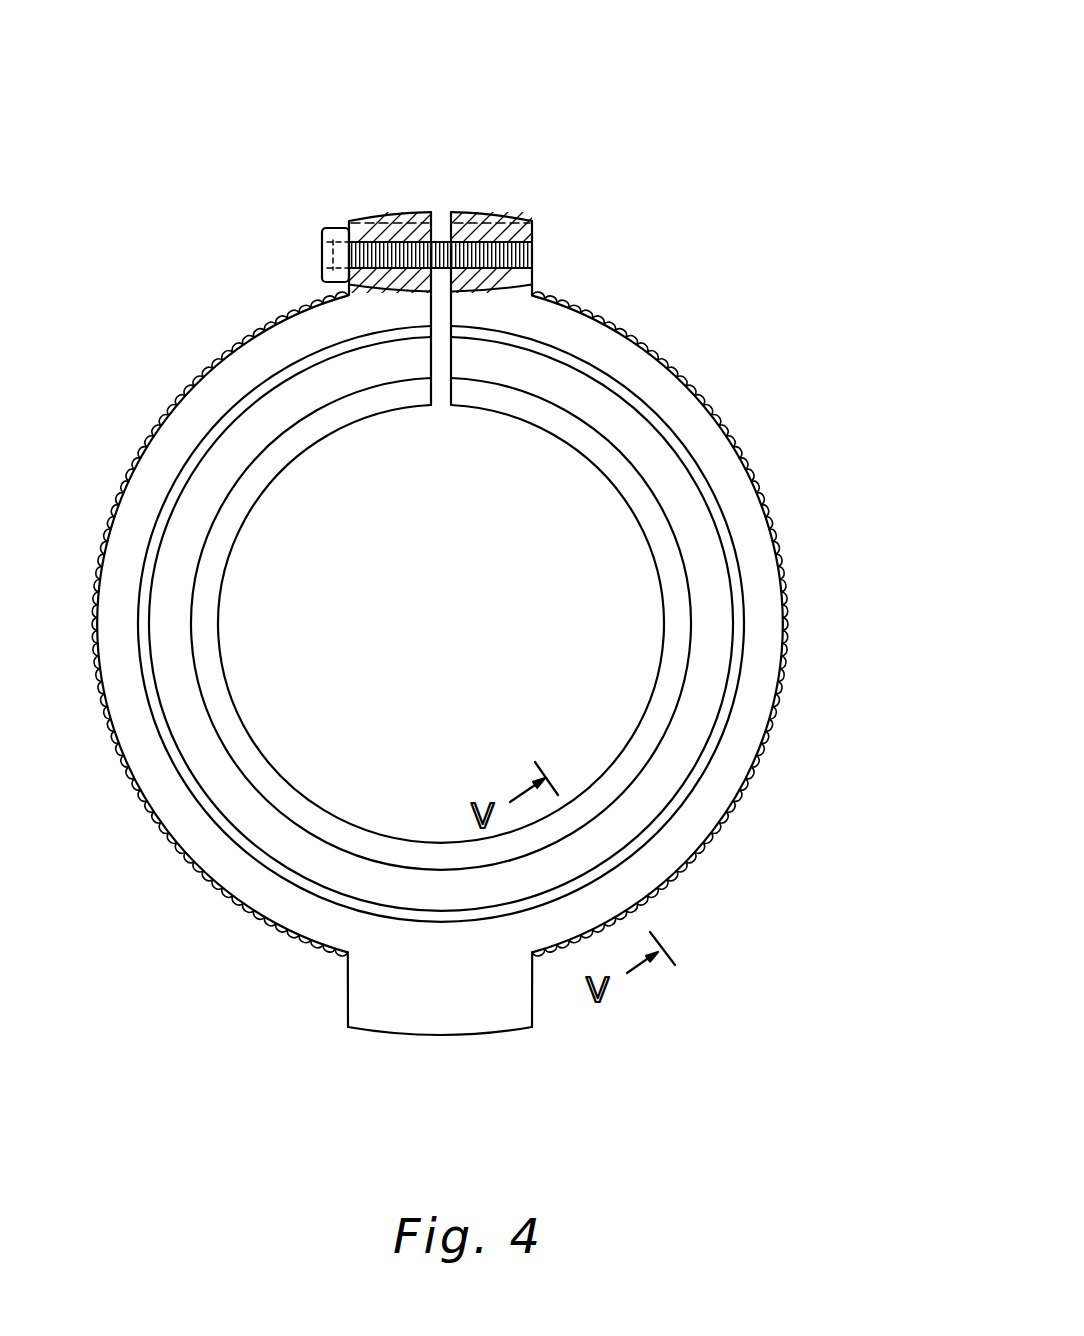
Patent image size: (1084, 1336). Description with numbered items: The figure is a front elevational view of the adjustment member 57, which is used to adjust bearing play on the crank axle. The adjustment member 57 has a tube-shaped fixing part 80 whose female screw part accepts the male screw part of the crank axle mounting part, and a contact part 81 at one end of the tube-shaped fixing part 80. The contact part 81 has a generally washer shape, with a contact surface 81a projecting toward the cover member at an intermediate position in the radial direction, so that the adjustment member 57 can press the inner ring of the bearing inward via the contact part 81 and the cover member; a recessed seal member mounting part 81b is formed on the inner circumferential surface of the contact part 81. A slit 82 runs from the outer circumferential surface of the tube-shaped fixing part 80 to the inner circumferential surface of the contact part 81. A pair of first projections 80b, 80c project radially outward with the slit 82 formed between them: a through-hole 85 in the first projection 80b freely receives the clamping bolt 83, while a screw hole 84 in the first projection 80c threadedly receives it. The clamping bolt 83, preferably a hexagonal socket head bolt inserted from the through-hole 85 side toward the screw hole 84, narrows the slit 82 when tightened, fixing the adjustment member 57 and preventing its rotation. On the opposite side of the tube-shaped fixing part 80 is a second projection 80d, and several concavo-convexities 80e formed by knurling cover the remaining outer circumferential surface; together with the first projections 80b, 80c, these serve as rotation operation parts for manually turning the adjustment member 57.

The adjustment member 57 is at (682, 322).
The tube-shaped fixing part 80 is at (740, 455).
The first projection 80b is at (390, 212).
The first projection 80c is at (495, 212).
The second projection 80d is at (503, 1022).
The concavo-convexities 80e is at (683, 872).
The contact part 81 is at (710, 578).
The contact surface 81a is at (712, 633).
The seal member mounting part 81b is at (600, 446).
The slit 82 is at (451, 378).
The clamping bolt 83 is at (336, 228).
The screw hole 84 is at (520, 258).
The through-hole 85 is at (396, 250).